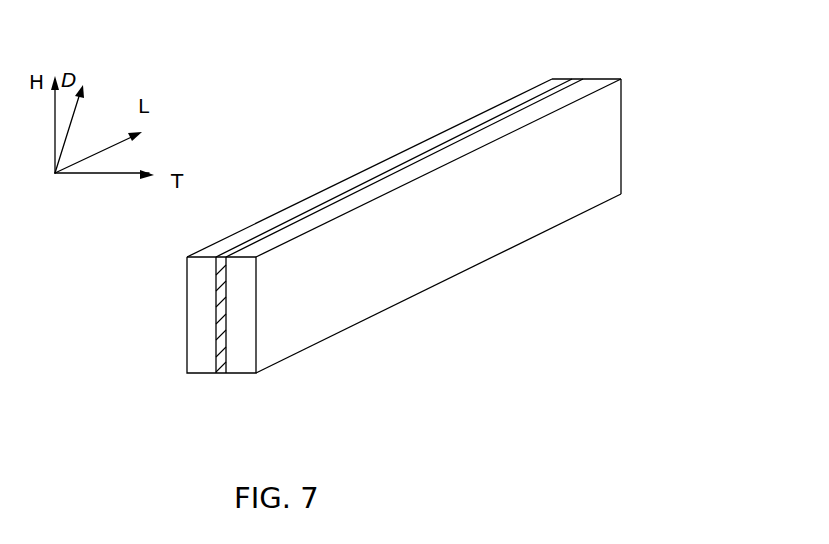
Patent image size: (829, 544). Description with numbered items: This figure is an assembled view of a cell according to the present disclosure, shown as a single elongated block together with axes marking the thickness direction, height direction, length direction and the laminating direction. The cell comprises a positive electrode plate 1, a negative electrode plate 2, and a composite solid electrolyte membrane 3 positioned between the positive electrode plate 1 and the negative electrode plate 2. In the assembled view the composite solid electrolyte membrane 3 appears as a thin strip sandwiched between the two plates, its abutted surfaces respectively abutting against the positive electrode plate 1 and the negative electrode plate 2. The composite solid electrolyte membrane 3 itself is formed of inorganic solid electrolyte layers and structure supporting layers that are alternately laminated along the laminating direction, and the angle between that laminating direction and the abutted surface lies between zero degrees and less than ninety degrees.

The positive electrode plate 1 is at (404, 212).
The negative electrode plate 2 is at (518, 218).
The composite solid electrolyte membrane 3 is at (402, 169).